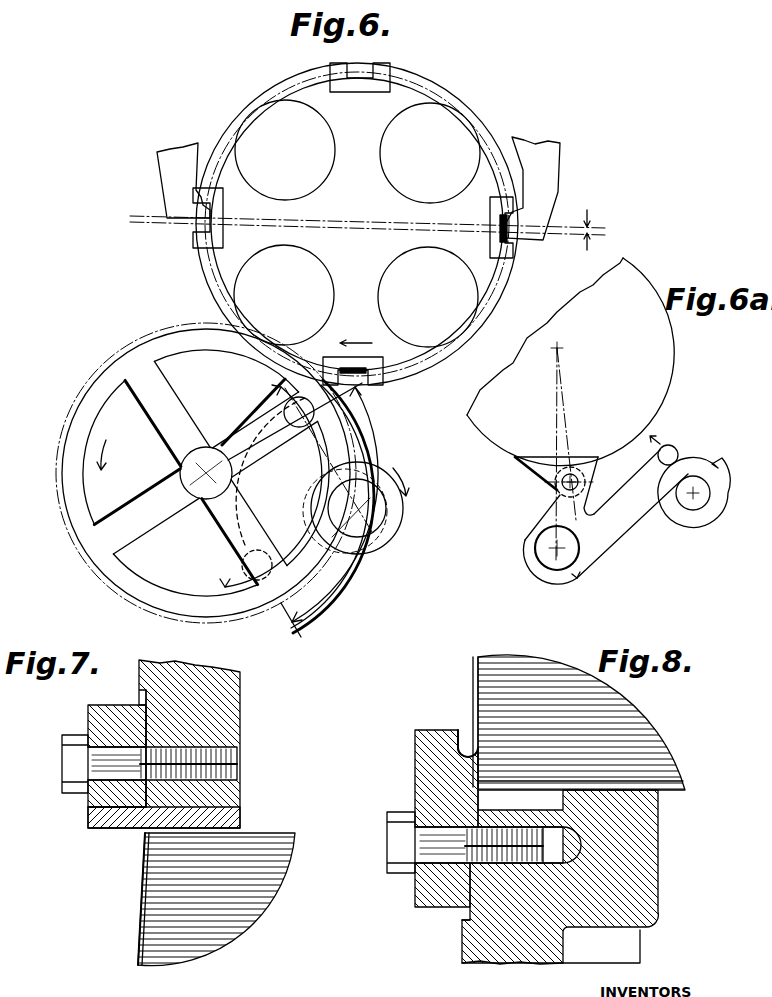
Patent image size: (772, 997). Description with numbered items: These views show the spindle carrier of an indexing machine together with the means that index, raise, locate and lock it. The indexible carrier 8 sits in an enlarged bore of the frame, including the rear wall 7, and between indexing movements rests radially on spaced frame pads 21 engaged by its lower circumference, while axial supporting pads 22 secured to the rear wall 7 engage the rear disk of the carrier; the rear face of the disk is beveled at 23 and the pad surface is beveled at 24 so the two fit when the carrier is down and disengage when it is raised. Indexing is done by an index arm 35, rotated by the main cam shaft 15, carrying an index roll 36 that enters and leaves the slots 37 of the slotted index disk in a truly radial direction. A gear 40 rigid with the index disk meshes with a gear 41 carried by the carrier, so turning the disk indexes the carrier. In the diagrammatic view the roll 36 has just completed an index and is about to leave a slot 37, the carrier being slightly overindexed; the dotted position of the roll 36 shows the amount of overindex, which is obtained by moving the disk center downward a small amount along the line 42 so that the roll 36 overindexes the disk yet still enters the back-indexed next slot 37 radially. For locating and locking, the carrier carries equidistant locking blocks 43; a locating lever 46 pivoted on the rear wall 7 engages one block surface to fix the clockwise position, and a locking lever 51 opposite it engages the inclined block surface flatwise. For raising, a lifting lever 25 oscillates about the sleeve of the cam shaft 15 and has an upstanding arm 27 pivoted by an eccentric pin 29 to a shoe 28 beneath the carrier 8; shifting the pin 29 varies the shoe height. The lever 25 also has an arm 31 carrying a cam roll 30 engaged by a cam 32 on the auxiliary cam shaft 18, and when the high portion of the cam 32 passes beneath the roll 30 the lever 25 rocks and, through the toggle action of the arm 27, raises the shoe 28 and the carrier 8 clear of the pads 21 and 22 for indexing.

In FIG. 8, the rear wall 7 is at (473, 945).
In FIG. 6A, the indexible carrier 8 is at (662, 382).
In FIG. 7, the indexible carrier 8 is at (255, 893).
In FIG. 8, the indexible carrier 8 is at (517, 665).
In FIG. 6A, the main cam shaft 15 is at (541, 549).
In FIG. 6A, the auxiliary cam shaft 18 is at (683, 503).
In FIG. 7, the frame pads 21 is at (140, 828).
In FIG. 8, the frame pads 21 is at (658, 812).
In FIG. 8, the axial supporting pads 22 is at (425, 787).
In FIG. 7, the beveled rear face 23 is at (141, 875).
In FIG. 8, the beveled rear face 23 is at (474, 685).
In FIG. 8, the beveled supporting surface 24 is at (465, 730).
In FIG. 6A, the lifting lever 25 is at (580, 578).
In FIG. 6A, the upstanding arm 27 is at (556, 491).
In FIG. 6A, the shoe 28 is at (518, 463).
In FIG. 6A, the pin 29 is at (598, 480).
In FIG. 6A, the cam roll 30 is at (669, 445).
In FIG. 6A, the arm 31 is at (627, 507).
In FIG. 6A, the cam 32 is at (720, 475).
In FIG. 6, the index arm 35 is at (363, 463).
In FIG. 6, the index roll 36 is at (292, 428).
In FIG. 6, the slots 37 is at (206, 473).
In FIG. 6, the gear 40 is at (190, 333).
In FIG. 6, the gear 41 is at (215, 268).
In FIG. 6, the line 42 is at (235, 528).
In FIG. 6, the locking blocks 43 is at (381, 80).
In FIG. 6, the locating lever 46 is at (548, 165).
In FIG. 6, the locking lever 51 is at (158, 160).